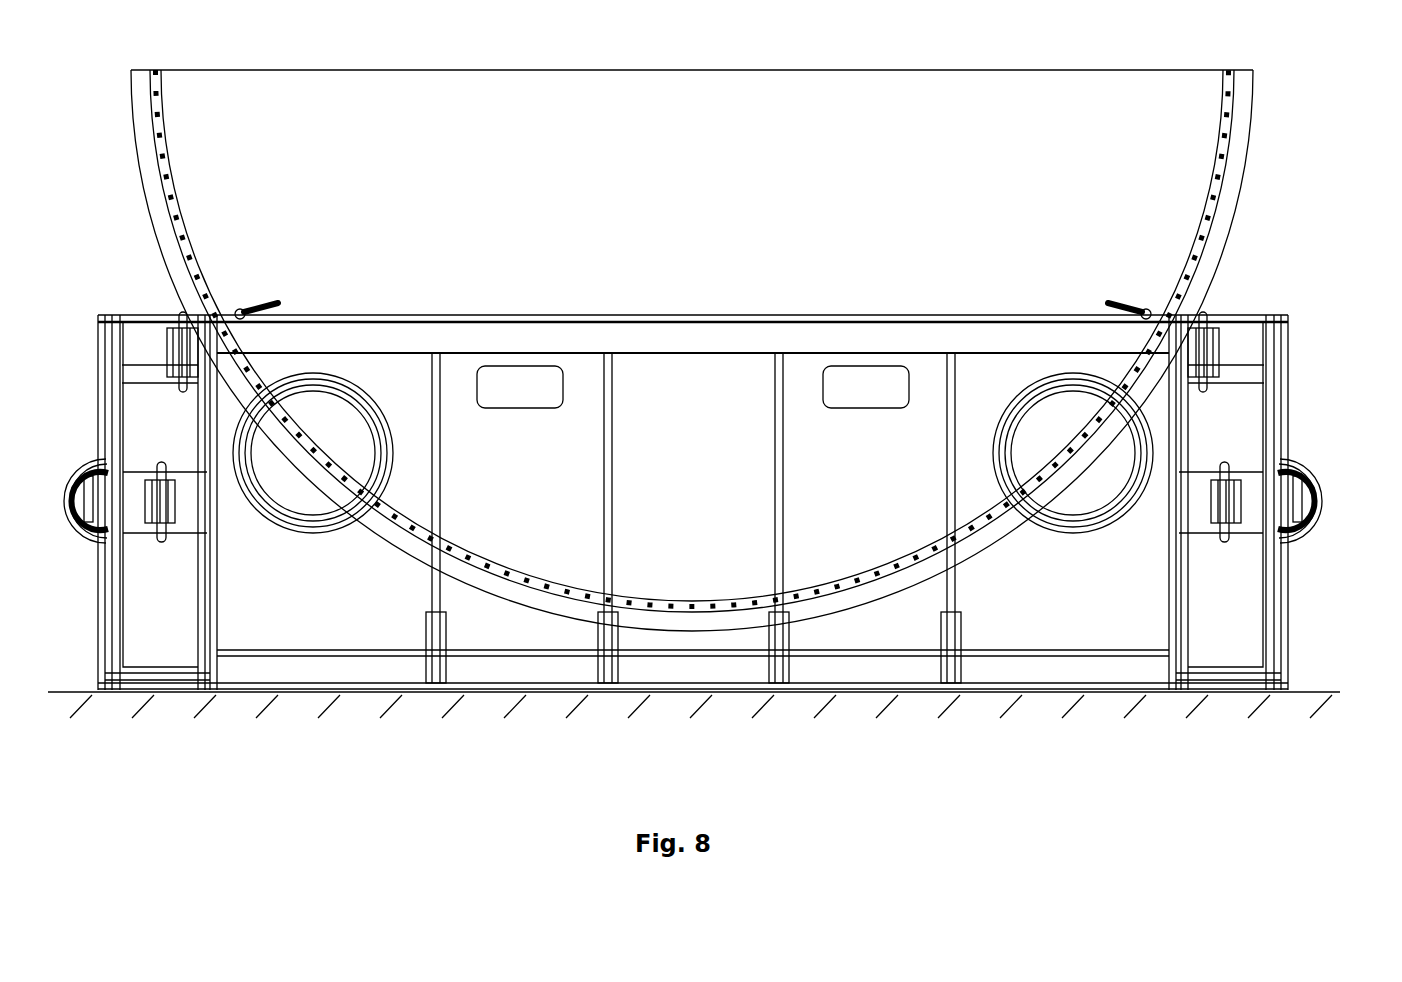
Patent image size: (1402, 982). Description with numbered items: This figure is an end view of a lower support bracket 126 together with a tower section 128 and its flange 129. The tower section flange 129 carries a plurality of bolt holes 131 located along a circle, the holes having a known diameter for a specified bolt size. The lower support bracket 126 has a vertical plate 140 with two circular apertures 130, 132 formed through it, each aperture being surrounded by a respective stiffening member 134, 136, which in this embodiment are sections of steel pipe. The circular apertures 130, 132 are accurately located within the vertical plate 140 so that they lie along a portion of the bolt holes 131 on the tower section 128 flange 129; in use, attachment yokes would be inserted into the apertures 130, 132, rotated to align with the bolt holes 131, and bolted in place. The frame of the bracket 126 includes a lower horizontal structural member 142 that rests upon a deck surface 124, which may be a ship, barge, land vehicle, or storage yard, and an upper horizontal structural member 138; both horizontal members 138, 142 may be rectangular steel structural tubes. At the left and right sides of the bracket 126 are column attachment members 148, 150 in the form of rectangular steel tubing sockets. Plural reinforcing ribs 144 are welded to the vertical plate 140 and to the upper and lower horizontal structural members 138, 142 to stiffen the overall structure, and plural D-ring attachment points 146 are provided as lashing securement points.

The deck surface 124 is at (1298, 689).
The lower support bracket 126 is at (655, 278).
The tower section 128 is at (586, 73).
The tower section flange 129 is at (131, 80).
The circular aperture 130 is at (288, 513).
The bolt holes 131 is at (176, 217).
The circular aperture 132 is at (1093, 518).
The stiffening member 134 is at (306, 528).
The stiffening member 136 is at (1077, 530).
The upper horizontal structural member 138 is at (860, 320).
The vertical plate 140 is at (725, 492).
The lower horizontal structural member 142 is at (842, 652).
The reinforcing ribs 144 is at (604, 523).
The D-ring attachment points 146 is at (58, 462).
The column attachment member 148 is at (123, 602).
The column attachment member 150 is at (1267, 602).